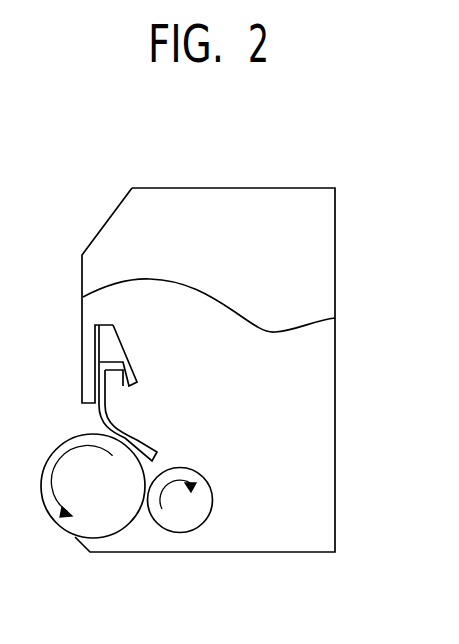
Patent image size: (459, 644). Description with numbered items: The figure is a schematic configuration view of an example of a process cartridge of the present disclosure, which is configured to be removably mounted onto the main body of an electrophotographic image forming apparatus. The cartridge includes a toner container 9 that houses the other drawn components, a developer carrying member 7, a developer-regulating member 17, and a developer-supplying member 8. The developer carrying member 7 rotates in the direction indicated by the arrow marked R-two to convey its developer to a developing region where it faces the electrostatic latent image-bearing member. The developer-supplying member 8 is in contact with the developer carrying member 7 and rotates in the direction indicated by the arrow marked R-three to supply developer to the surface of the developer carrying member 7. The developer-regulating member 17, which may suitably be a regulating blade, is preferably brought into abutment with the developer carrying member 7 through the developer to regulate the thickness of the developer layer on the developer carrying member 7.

The developer carrying member 7 is at (124, 529).
The developer-supplying member 8 is at (188, 467).
The toner container 9 is at (220, 188).
The developer-regulating member 17 is at (137, 438).